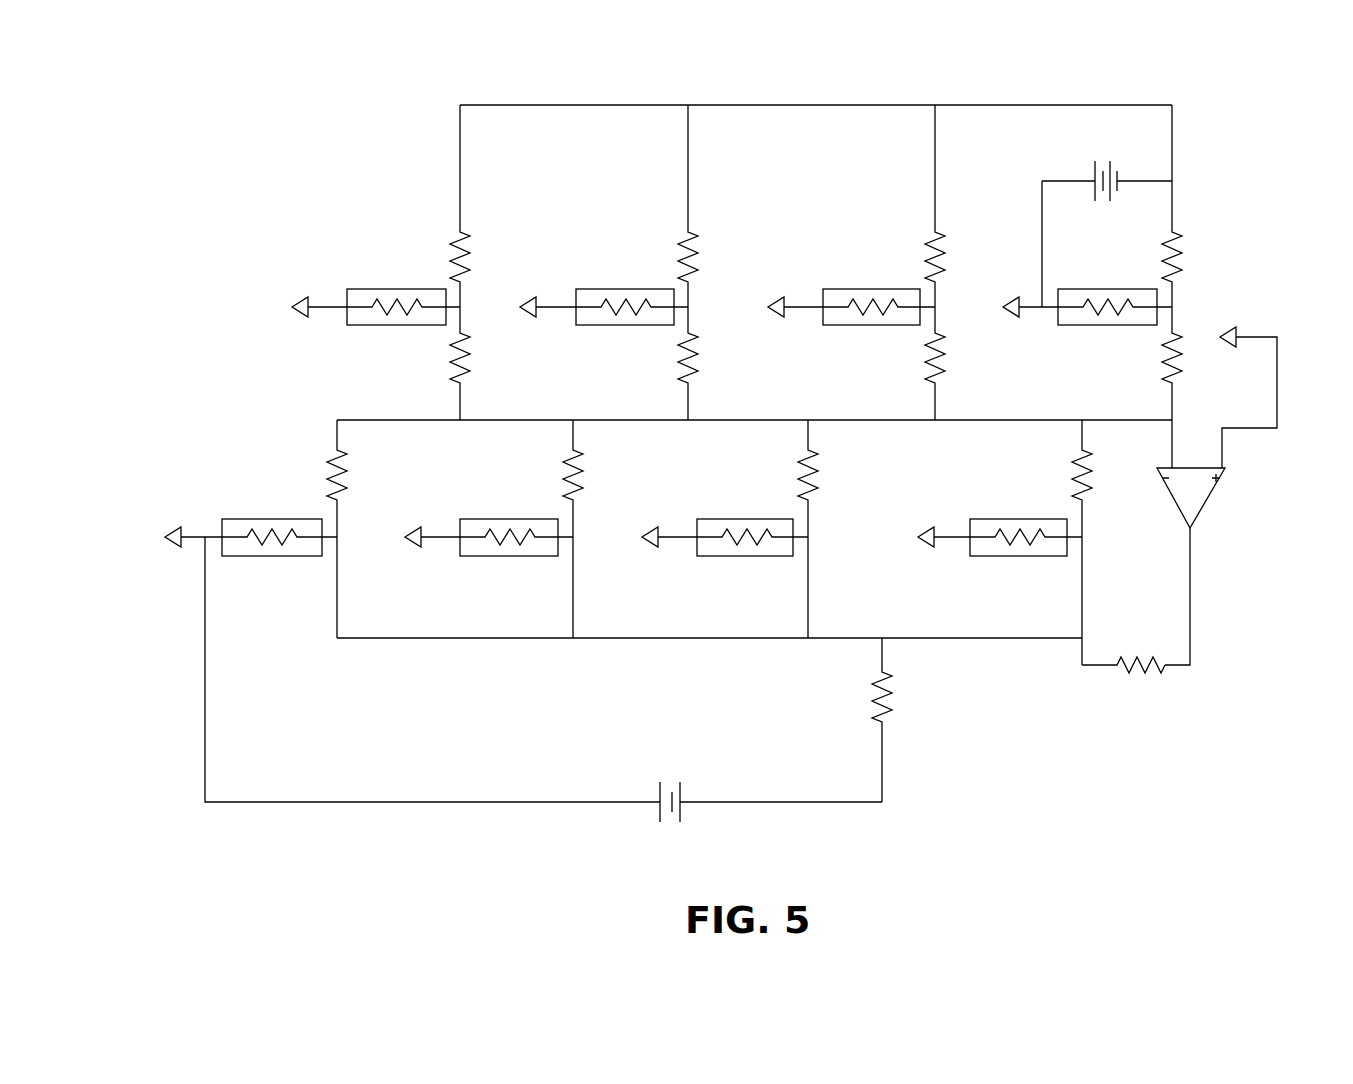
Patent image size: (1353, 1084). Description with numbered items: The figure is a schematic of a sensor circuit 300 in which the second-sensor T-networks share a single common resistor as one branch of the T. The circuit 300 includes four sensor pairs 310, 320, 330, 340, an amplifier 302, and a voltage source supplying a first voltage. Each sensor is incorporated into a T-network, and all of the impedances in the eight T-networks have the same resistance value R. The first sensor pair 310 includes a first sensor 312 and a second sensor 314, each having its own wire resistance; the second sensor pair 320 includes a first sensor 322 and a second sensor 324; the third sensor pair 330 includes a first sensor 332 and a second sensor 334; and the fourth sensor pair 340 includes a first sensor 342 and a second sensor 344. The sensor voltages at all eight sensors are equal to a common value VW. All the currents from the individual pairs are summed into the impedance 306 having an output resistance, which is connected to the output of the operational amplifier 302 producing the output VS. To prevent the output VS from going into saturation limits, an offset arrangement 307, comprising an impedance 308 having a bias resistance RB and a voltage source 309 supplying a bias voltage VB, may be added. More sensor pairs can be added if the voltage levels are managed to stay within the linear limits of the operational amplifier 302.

The circuit 300 is at (273, 190).
The amplifier 302 is at (1212, 498).
The impedance 306 is at (1152, 670).
The offset arrangement 307 is at (920, 782).
The impedance 308 is at (892, 697).
The voltage source 309 is at (682, 785).
The first sensor pair 310 is at (1077, 688).
The first sensor 312 is at (1127, 287).
The second sensor 314 is at (1018, 517).
The second sensor pair 320 is at (815, 685).
The first sensor 322 is at (873, 287).
The second sensor 324 is at (745, 517).
The third sensor pair 330 is at (585, 680).
The first sensor 332 is at (622, 287).
The second sensor 334 is at (517, 517).
The fourth sensor pair 340 is at (343, 680).
The first sensor 342 is at (403, 287).
The second sensor 344 is at (280, 517).